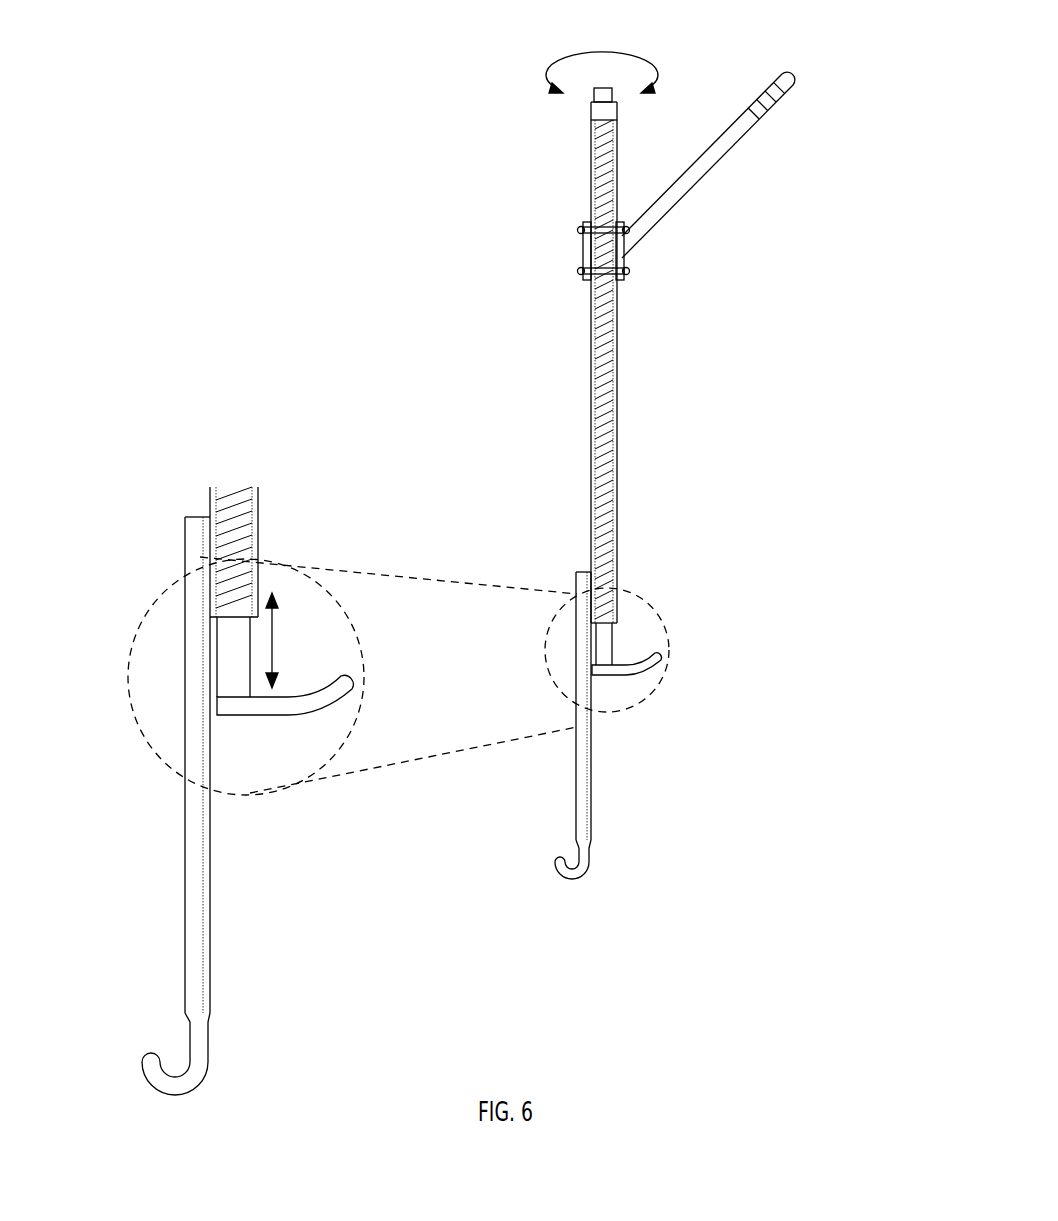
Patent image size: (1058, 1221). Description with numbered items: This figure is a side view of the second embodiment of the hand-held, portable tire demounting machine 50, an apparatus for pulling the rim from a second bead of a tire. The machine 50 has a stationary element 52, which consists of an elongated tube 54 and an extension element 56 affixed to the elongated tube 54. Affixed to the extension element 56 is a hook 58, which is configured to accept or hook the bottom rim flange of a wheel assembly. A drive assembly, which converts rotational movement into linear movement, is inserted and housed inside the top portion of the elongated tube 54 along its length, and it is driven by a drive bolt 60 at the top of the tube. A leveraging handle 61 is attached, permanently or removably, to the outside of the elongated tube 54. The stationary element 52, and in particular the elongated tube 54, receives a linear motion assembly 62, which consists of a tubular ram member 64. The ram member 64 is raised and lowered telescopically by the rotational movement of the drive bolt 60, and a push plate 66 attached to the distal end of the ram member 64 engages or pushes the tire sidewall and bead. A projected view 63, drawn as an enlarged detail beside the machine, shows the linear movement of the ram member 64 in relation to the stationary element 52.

The hand-held, portable tire demounting machine 50 is at (705, 488).
The stationary element 52 is at (591, 93).
The elongated tube 54 is at (618, 380).
The extension element 56 is at (594, 778).
The hook 58 is at (591, 862).
The drive bolt 60 is at (614, 93).
The leveraging handle 61 is at (750, 138).
The linear motion assembly 62 is at (618, 108).
The projected view 63 is at (634, 592).
The ram member 64 is at (613, 633).
The push plate 66 is at (640, 671).